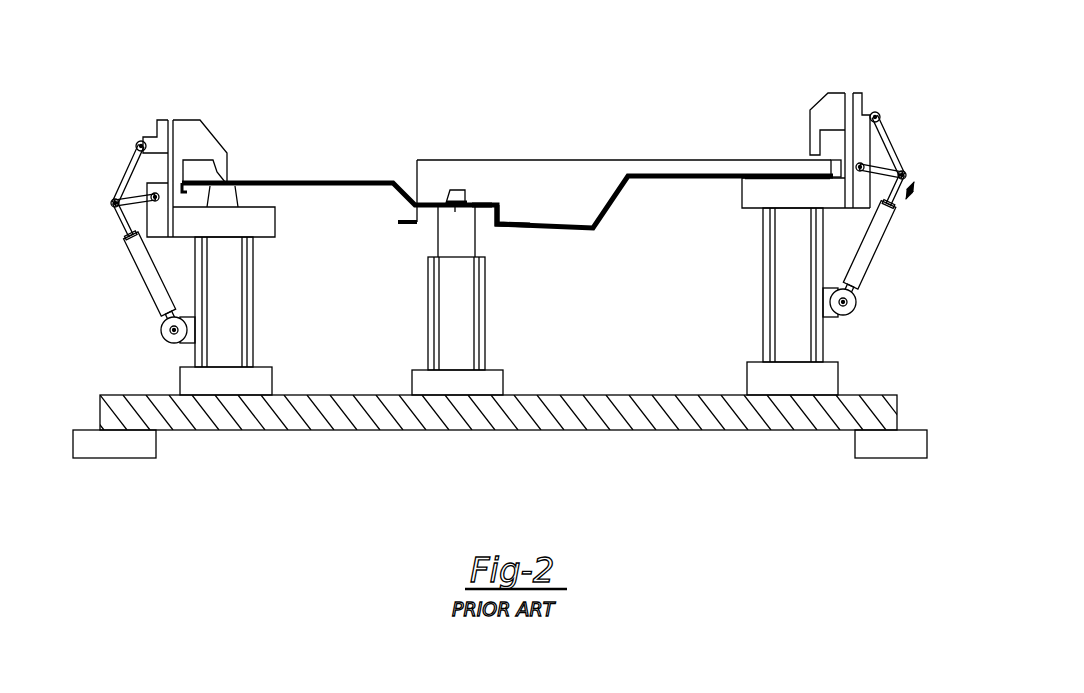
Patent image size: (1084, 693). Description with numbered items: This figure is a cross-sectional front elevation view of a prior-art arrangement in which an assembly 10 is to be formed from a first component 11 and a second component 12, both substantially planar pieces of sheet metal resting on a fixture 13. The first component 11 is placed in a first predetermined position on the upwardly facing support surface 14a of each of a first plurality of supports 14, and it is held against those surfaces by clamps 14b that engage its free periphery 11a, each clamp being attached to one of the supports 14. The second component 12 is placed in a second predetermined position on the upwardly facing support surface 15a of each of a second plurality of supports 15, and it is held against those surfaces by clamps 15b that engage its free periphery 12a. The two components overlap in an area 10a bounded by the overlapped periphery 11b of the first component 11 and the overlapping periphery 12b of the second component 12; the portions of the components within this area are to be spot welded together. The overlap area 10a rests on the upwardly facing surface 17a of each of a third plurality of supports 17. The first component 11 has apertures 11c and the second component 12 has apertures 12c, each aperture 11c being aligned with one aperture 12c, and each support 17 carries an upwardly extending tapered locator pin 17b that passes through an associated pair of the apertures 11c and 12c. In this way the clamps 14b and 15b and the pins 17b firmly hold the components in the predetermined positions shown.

The assembly 10 is at (556, 124).
The overlap area 10a is at (483, 198).
The first component 11 is at (707, 183).
The free periphery 11a is at (831, 167).
The overlapped periphery 11b is at (400, 222).
The apertures 11c is at (460, 236).
The second component 12 is at (346, 182).
The free periphery 12a is at (188, 180).
The overlapping periphery 12b is at (498, 205).
The apertures 12c is at (455, 192).
The fixture 13 is at (650, 395).
The first plurality of supports 14 is at (807, 313).
The support surface 14a is at (828, 170).
The clamps 14b is at (870, 97).
The second plurality of supports 15 is at (240, 305).
The support surface 15a is at (228, 183).
The clamps 15b is at (183, 128).
The third plurality of supports 17 is at (476, 301).
The support surface 17a is at (458, 205).
The tapered locator pin 17b is at (465, 195).